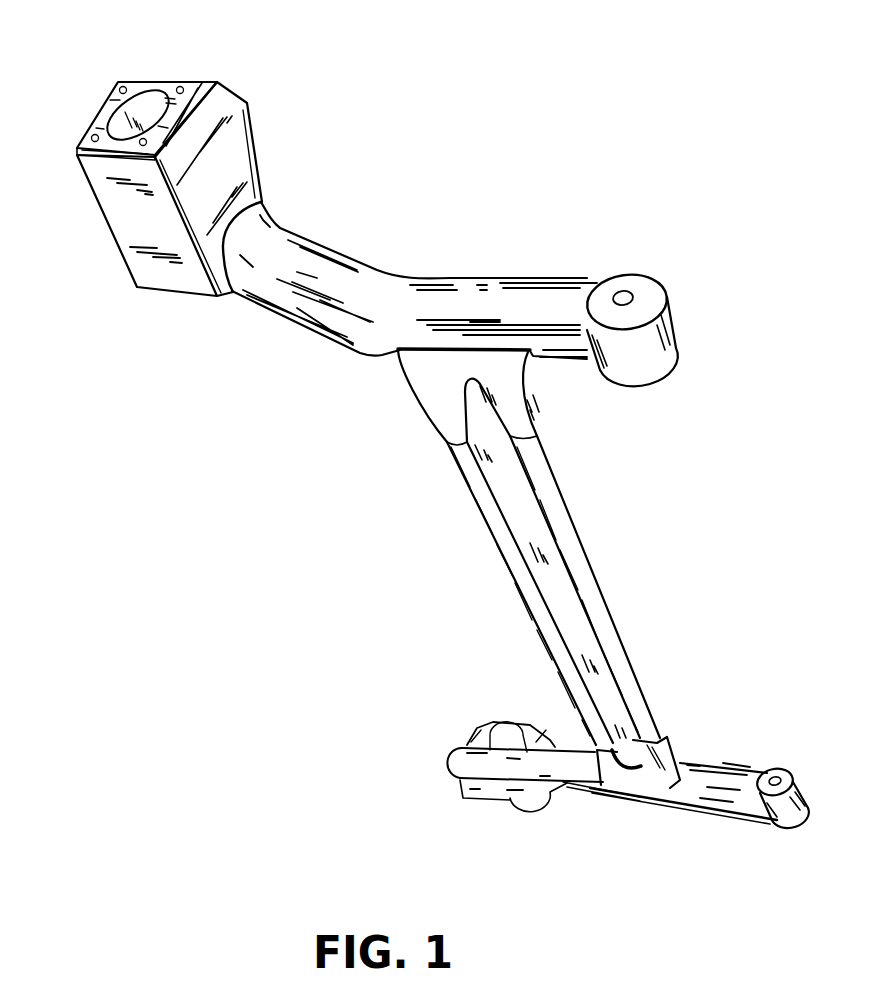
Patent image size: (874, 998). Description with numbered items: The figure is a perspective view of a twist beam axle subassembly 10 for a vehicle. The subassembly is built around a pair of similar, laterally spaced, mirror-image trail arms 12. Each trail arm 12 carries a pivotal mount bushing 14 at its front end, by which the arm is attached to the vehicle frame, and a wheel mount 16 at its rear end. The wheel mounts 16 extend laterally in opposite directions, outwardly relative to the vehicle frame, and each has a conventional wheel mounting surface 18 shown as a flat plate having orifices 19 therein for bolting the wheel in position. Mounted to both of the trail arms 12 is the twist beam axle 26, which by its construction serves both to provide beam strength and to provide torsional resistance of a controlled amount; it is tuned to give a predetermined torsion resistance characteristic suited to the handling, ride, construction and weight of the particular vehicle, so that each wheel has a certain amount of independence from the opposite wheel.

The twist beam axle subassembly 10 is at (645, 204).
The trail arm 12 is at (333, 257).
The pivotal mount bushing 14 is at (642, 293).
The wheel mount 16 is at (103, 167).
The wheel mounting surface 18 is at (165, 85).
The orifices 19 is at (118, 85).
The twist beam axle 26 is at (636, 632).